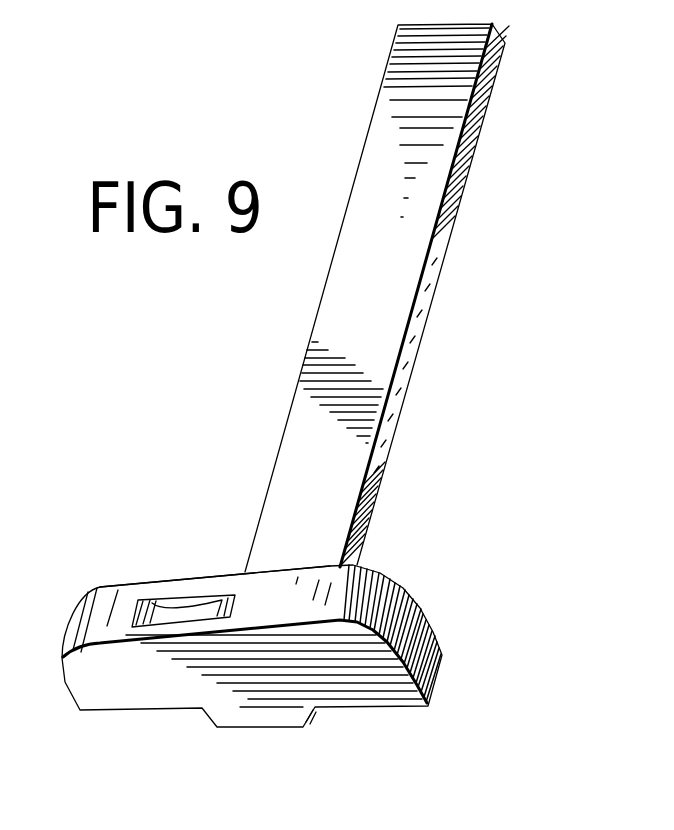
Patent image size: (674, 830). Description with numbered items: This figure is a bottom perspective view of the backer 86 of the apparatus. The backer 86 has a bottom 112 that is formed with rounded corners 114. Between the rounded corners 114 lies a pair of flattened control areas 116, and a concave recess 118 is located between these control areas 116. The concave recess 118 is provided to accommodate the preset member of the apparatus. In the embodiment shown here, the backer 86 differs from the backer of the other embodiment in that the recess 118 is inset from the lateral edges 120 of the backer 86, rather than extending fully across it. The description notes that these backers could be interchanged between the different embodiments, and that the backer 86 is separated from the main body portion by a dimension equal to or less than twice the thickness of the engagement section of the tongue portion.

The backer 86 is at (432, 632).
The bottom 112 is at (443, 262).
The rounded corners 114 is at (387, 582).
The flattened control areas 116 is at (113, 613).
The concave recess 118 is at (176, 606).
The lateral edges 120 is at (162, 630).